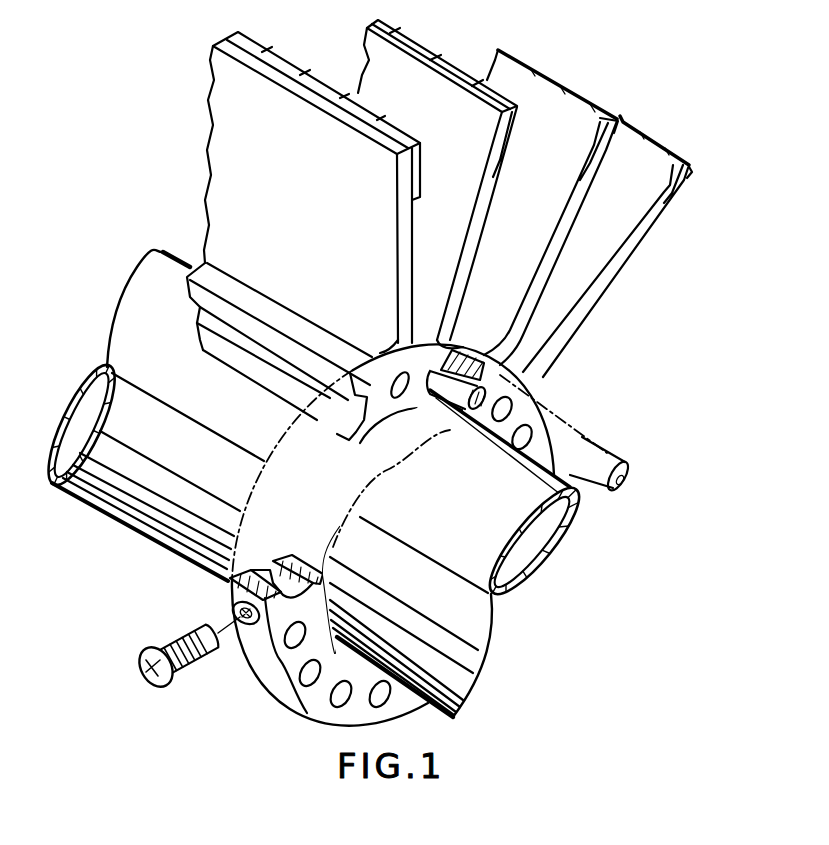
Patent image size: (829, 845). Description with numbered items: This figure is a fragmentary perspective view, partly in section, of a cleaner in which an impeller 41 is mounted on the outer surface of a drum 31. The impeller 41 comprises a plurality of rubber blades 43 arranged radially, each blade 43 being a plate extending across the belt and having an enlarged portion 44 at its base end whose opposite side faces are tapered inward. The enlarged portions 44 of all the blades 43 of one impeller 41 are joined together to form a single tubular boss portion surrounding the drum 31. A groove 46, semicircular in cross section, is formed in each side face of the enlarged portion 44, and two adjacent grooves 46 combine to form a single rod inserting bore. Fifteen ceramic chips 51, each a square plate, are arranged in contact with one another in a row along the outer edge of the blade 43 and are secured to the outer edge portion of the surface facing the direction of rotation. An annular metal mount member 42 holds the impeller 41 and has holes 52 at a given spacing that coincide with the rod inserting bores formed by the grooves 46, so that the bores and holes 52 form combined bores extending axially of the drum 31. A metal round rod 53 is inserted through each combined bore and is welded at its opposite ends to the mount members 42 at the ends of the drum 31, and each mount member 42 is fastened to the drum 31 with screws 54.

The drum 31 is at (126, 522).
The impeller 41 is at (462, 196).
The annular mount member 42 is at (260, 680).
The rubber blade 43 is at (407, 232).
The enlarged portion 44 is at (377, 368).
The groove 46 is at (388, 403).
The ceramic chip 51 is at (380, 120).
The hole 52 is at (308, 682).
The metal round rod 53 is at (478, 428).
The screw 54 is at (153, 686).